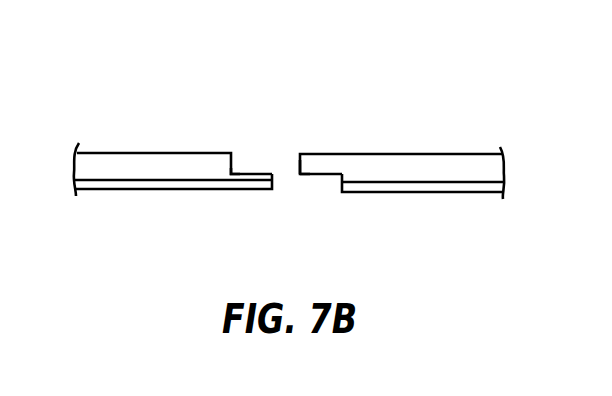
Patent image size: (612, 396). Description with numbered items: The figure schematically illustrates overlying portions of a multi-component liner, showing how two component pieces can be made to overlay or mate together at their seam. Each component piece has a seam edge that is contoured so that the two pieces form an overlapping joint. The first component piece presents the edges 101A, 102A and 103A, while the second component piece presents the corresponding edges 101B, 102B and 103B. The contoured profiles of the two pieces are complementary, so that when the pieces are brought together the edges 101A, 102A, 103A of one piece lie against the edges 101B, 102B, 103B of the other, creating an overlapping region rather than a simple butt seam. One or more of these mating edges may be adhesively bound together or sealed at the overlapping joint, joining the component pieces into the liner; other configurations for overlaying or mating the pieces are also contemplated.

The edge 101A is at (263, 172).
The edge 102A is at (235, 160).
The edge 103A is at (273, 185).
The edge 101B is at (308, 176).
The edge 102B is at (297, 163).
The edge 103B is at (322, 176).